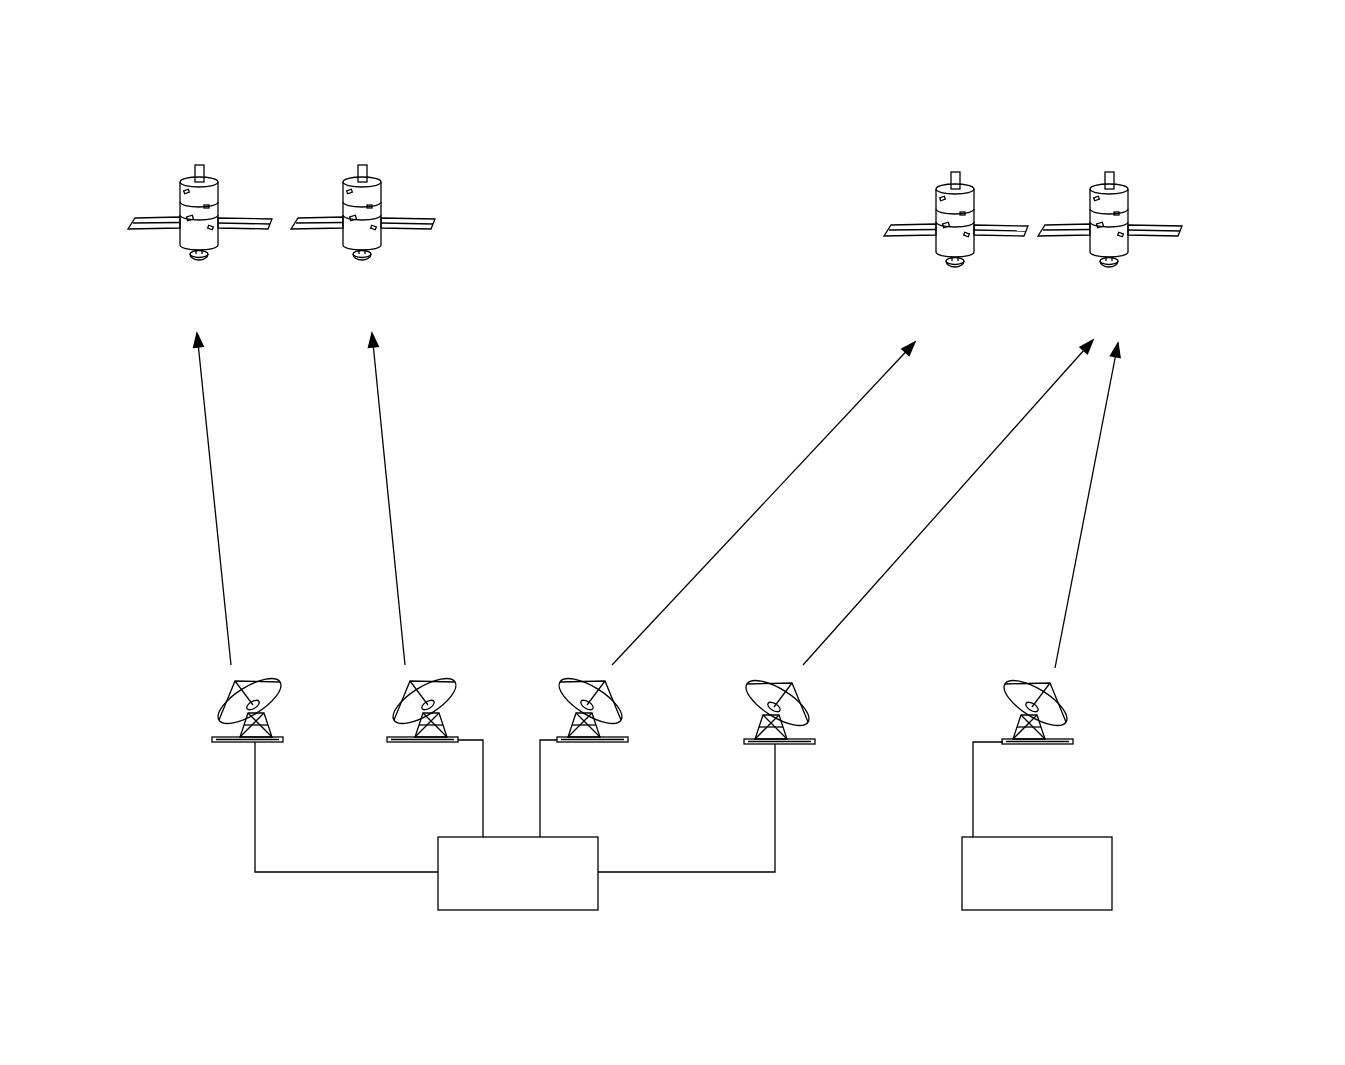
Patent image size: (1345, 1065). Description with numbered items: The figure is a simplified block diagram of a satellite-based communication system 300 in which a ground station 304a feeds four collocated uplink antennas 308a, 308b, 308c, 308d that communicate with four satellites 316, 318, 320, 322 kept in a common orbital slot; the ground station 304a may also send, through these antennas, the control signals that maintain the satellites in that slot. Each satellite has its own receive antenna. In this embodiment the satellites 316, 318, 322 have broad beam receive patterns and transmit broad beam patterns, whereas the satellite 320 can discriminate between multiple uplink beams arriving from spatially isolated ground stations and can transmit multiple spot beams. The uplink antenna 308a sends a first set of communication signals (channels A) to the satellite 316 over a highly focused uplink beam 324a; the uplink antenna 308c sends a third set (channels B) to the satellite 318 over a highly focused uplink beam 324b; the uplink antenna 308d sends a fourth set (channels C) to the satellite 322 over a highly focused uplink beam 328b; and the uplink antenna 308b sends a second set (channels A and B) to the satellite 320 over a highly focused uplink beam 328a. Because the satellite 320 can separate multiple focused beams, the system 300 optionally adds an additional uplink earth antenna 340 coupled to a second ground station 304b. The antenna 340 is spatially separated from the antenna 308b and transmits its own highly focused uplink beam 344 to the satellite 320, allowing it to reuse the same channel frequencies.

The satellite-based communication system 300 is at (1267, 140).
The ground station 304a is at (598, 852).
The ground station 304b is at (1113, 863).
The uplink antenna 308a is at (387, 740).
The uplink antenna 308b is at (803, 738).
The uplink antenna 308c is at (212, 740).
The uplink antenna 308d is at (625, 738).
The satellite 316 is at (365, 167).
The satellite 318 is at (203, 167).
The satellite 320 is at (1113, 175).
The satellite 322 is at (958, 175).
The highly focused uplink beam 324a is at (388, 507).
The highly focused uplink beam 324b is at (215, 507).
The highly focused uplink beam 328a is at (867, 593).
The highly focused uplink beam 328b is at (718, 547).
The additional uplink earth antenna 340 is at (1073, 740).
The highly focused uplink beam 344 is at (1088, 495).